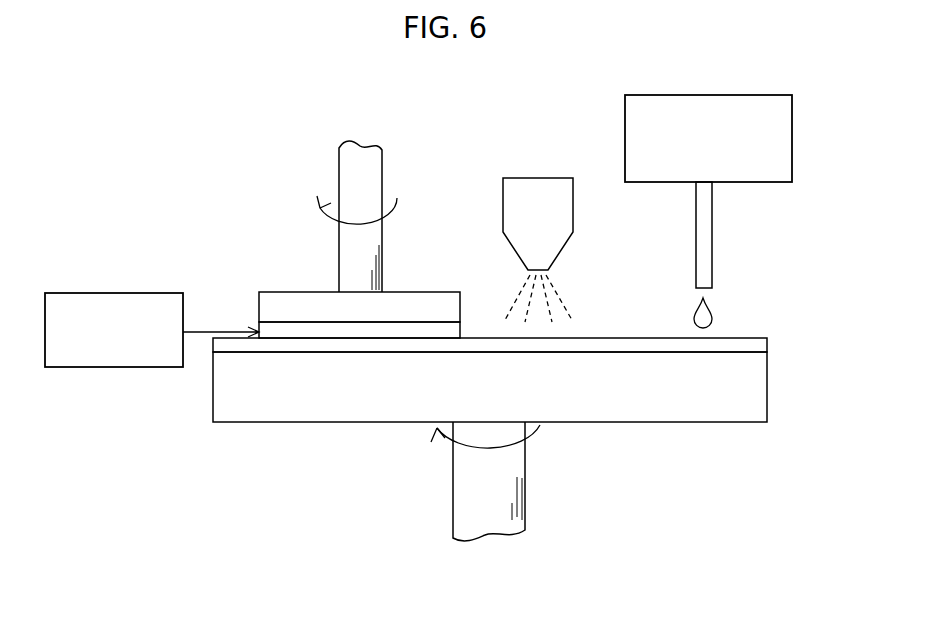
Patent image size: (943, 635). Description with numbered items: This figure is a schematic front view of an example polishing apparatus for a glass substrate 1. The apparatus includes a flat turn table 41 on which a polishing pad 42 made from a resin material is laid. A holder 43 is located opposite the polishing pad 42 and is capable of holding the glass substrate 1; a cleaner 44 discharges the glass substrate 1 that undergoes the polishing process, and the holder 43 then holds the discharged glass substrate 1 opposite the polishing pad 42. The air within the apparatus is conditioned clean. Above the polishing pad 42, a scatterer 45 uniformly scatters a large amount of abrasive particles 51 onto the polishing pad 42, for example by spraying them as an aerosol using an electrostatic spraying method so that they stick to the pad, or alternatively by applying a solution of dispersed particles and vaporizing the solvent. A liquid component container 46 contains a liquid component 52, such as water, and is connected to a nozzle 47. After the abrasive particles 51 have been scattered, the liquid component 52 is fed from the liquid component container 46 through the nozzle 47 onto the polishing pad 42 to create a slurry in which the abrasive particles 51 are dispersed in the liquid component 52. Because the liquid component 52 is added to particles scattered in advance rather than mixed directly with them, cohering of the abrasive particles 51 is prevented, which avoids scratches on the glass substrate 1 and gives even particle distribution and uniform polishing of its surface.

The glass substrate 1 is at (460, 331).
The turn table 41 is at (700, 408).
The polishing pad 42 is at (757, 342).
The holder 43 is at (302, 298).
The cleaner 44 is at (145, 293).
The scatterer 45 is at (537, 180).
The liquid component container 46 is at (735, 95).
The nozzle 47 is at (705, 228).
The abrasive particles 51 is at (562, 297).
The liquid component 52 is at (710, 310).